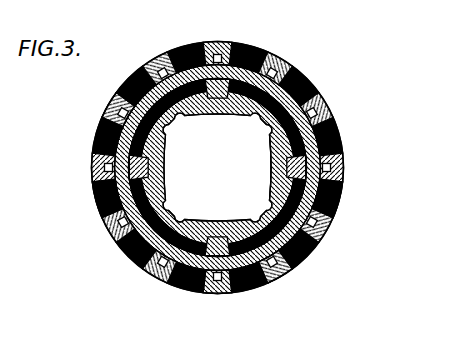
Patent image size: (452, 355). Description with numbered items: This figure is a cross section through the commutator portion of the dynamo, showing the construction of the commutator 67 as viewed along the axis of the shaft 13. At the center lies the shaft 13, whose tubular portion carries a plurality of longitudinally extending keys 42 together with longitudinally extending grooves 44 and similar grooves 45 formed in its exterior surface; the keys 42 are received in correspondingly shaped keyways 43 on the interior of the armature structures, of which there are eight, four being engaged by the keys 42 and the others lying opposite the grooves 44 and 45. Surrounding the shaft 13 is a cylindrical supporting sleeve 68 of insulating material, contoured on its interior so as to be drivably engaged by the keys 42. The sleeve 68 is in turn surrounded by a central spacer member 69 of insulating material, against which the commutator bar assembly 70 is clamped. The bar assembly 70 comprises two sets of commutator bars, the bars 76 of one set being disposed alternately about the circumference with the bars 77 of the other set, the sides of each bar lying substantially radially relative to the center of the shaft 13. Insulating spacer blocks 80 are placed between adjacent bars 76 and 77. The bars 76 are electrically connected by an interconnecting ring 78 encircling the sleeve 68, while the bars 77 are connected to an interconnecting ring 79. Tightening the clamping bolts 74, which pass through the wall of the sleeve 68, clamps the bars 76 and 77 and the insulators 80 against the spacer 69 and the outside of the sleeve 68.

The shaft 13 is at (168, 173).
The keys 42 is at (263, 117).
The keyways 43 is at (178, 217).
The grooves 44 is at (275, 158).
The grooves 45 is at (216, 98).
The commutator 67 is at (314, 70).
The supporting sleeve 68 is at (288, 272).
The central spacer member 69 is at (344, 185).
The commutator bar assembly 70 is at (226, 300).
The clamping bolts 74 is at (224, 226).
The commutator bars 76 is at (163, 50).
The commutator bars 77 is at (220, 38).
The ring 78 is at (107, 110).
The interconnecting ring 79 is at (93, 200).
The insulating spacer blocks 80 is at (249, 40).